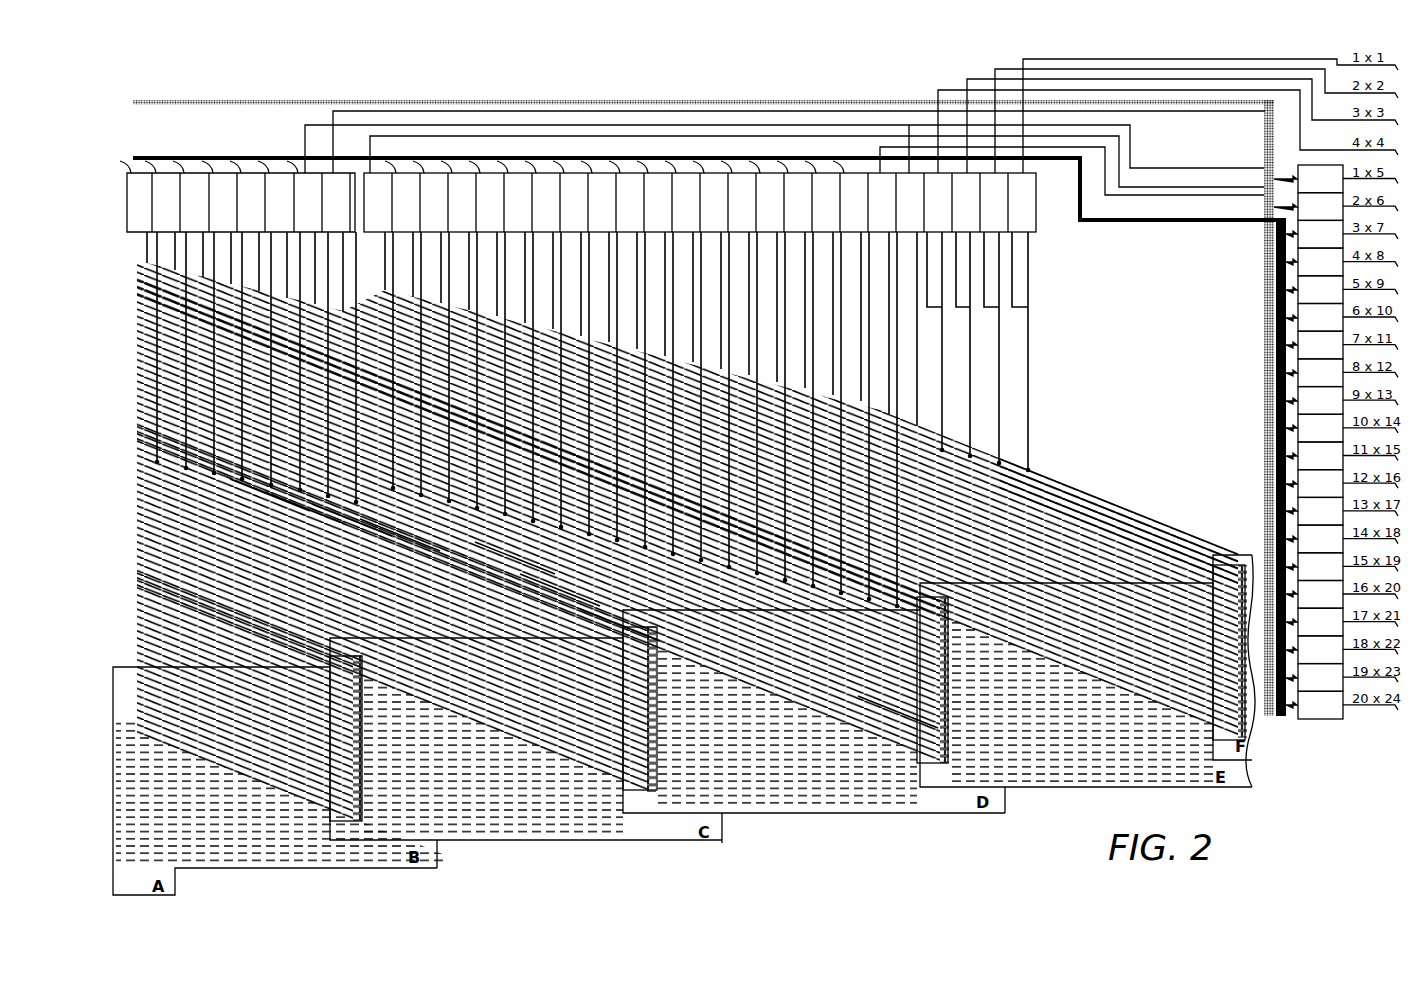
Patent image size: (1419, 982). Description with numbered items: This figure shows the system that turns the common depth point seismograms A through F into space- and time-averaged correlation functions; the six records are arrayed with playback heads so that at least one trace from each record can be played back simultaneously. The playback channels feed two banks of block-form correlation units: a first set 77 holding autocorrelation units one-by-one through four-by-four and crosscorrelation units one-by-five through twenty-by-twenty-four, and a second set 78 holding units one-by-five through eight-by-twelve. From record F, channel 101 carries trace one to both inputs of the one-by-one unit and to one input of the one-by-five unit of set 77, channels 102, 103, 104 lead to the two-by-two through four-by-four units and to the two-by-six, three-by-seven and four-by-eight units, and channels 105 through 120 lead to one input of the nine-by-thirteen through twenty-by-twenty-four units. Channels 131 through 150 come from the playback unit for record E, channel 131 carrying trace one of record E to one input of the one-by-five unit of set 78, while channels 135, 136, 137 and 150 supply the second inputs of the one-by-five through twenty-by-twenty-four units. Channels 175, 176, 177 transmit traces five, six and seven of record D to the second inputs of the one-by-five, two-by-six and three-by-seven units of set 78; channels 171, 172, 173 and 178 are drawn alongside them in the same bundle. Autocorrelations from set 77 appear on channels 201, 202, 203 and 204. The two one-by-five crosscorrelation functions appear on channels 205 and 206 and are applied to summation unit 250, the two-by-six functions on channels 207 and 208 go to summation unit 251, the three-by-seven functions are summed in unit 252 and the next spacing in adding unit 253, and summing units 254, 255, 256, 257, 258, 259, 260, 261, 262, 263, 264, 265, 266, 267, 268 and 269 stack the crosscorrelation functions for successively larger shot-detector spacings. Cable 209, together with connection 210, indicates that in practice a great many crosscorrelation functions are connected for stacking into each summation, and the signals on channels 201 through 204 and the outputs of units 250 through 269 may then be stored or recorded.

The first set of correlation units 77 is at (648, 232).
The second set of correlation units 78 is at (246, 173).
The signal channel 101 is at (1172, 542).
The channel 102 is at (1133, 527).
The channel 103 is at (1098, 517).
The channel 104 is at (1057, 505).
The channel 105 is at (1023, 493).
The channel 120 is at (1212, 692).
The channel 131 is at (897, 585).
The channel 135 is at (869, 603).
The channel 136 is at (841, 598).
The channel 137 is at (755, 560).
The channel 150 is at (898, 712).
The wire 171 is at (515, 558).
The wire 172 is at (562, 591).
The wire 173 is at (620, 625).
The channel 175 is at (401, 536).
The channel 176 is at (353, 522).
The channel 177 is at (306, 510).
The wire 178 is at (270, 497).
The channel 201 is at (1075, 59).
The channel 202 is at (1147, 69).
The channel 203 is at (1222, 79).
The channel 204 is at (1290, 90).
The channel 205 is at (722, 111).
The channel 206 is at (905, 125).
The channel 207 is at (695, 136).
The channel 208 is at (878, 147).
The cable 209 is at (520, 101).
The bus conductor 210 is at (512, 158).
The summation unit 250 is at (1306, 187).
The summation unit 251 is at (1306, 215).
The summing unit 252 is at (1306, 242).
The adding unit 253 is at (1306, 270).
The summing unit 254 is at (1306, 298).
The summing unit 255 is at (1306, 326).
The summing unit 256 is at (1306, 353).
The summing unit 257 is at (1306, 381).
The summing unit 258 is at (1306, 409).
The summing unit 259 is at (1306, 436).
The summing unit 260 is at (1306, 464).
The summing unit 261 is at (1306, 492).
The summing unit 262 is at (1306, 519).
The summing unit 263 is at (1306, 547).
The summing unit 264 is at (1306, 575).
The summing unit 265 is at (1306, 602).
The summing unit 266 is at (1306, 630).
The summing unit 267 is at (1306, 658).
The summing unit 268 is at (1306, 686).
The summing unit 269 is at (1306, 713).